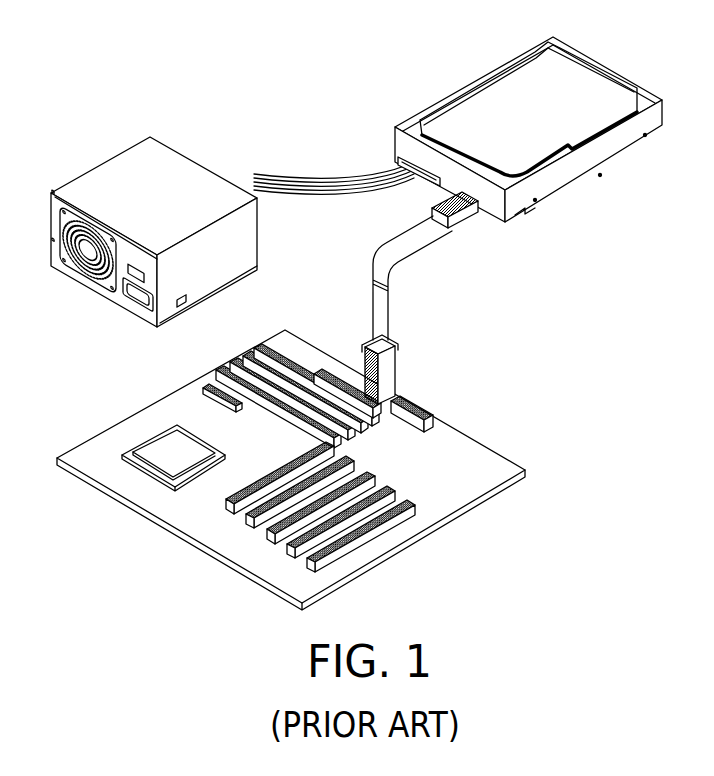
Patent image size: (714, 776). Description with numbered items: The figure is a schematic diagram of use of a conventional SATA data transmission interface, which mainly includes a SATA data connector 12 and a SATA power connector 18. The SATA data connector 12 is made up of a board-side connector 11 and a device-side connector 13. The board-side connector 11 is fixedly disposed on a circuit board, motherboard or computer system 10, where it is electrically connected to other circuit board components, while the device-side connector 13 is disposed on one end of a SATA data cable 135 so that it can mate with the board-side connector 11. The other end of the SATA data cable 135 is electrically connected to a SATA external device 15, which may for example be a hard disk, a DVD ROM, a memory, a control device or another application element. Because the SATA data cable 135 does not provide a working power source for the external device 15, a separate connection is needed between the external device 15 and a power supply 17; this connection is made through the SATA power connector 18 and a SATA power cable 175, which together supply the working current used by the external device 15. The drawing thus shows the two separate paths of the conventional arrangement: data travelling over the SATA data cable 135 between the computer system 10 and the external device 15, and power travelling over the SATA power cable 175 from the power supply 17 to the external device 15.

The computer system 10 is at (502, 463).
The board-side connector 11 is at (402, 399).
The SATA data connector 12 is at (421, 298).
The device-side connector 13 is at (399, 364).
The SATA data cable 135 is at (418, 240).
The SATA external device 15 is at (508, 78).
The power supply 17 is at (131, 162).
The SATA power cable 175 is at (278, 170).
The SATA power connector 18 is at (383, 154).